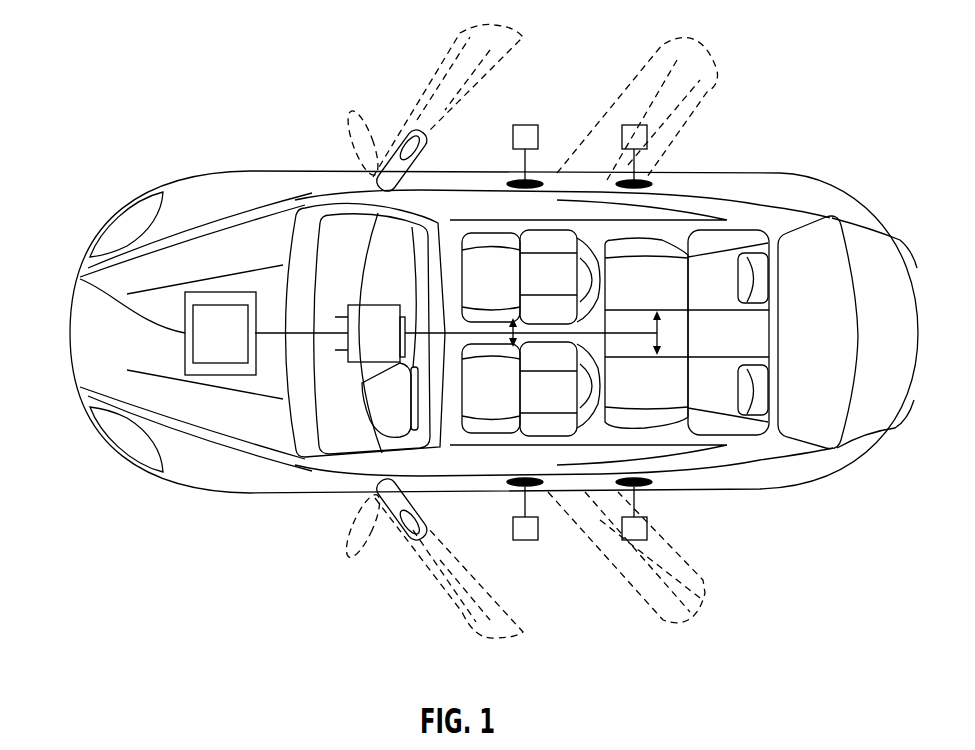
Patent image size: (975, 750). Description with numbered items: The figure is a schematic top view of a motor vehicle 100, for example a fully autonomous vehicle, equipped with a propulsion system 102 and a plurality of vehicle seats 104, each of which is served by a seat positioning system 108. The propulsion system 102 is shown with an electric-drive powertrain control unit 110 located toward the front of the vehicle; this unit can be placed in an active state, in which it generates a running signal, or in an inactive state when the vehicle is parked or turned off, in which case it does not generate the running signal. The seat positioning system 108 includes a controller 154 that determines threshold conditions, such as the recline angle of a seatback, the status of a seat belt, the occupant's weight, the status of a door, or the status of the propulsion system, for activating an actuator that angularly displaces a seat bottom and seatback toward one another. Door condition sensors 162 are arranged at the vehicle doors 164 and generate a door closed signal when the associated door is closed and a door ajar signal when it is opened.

The motor vehicle 100 is at (90, 81).
The propulsion system 102 is at (82, 279).
The vehicle seat 104 is at (483, 267).
The seat positioning system 108 is at (219, 287).
The electric-drive powertrain control unit 110 is at (239, 346).
The controller 154 is at (395, 347).
The door condition sensor 162 is at (530, 125).
The vehicle door 164 is at (480, 188).